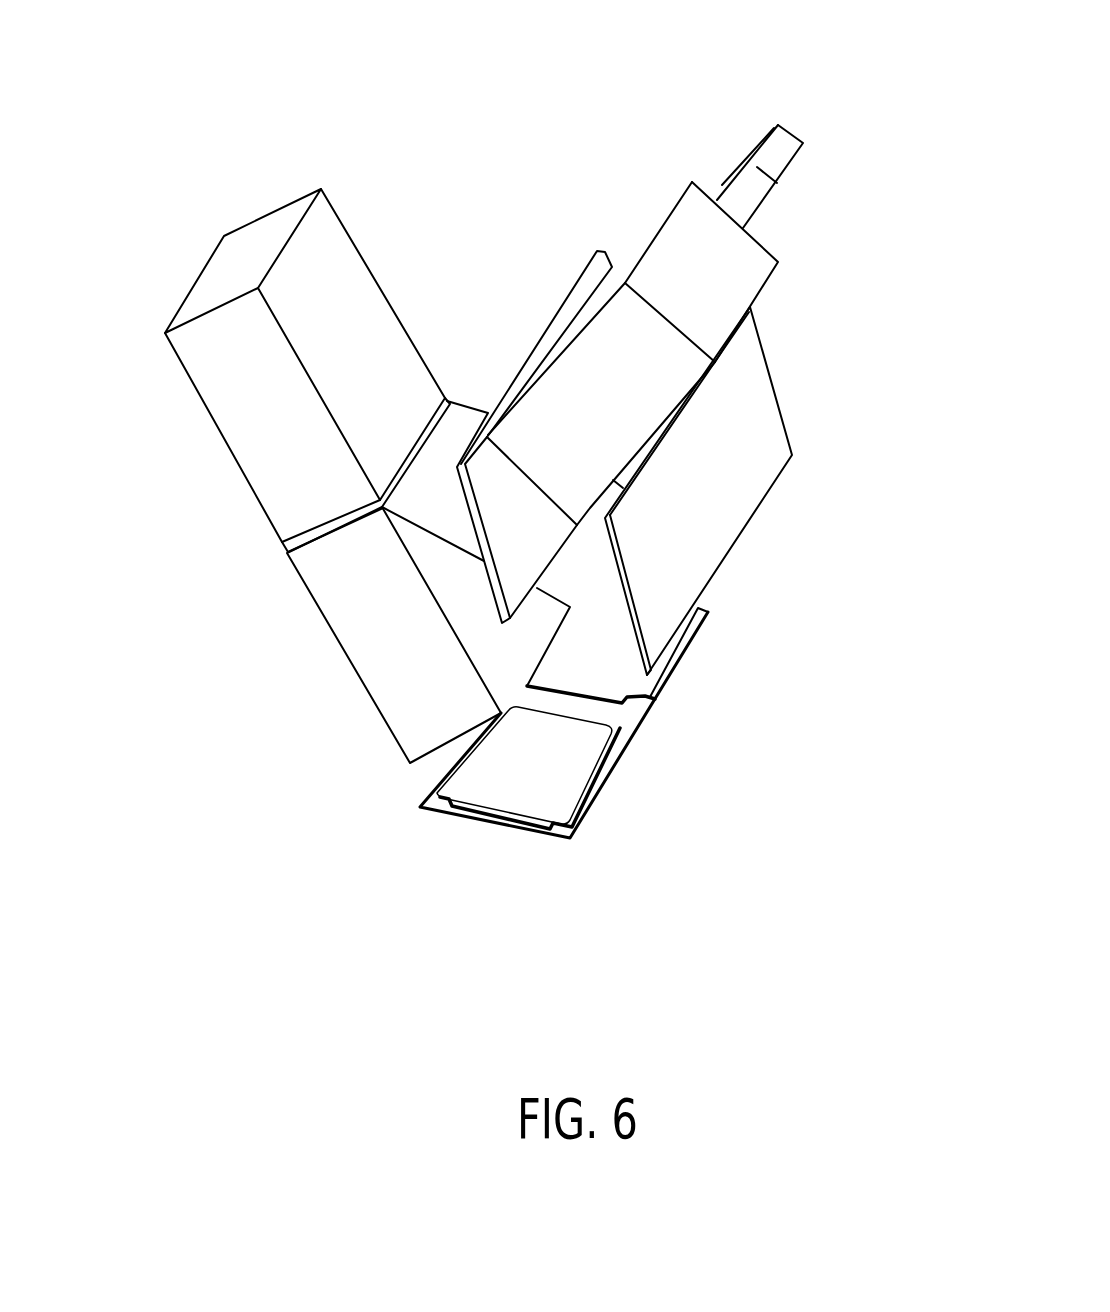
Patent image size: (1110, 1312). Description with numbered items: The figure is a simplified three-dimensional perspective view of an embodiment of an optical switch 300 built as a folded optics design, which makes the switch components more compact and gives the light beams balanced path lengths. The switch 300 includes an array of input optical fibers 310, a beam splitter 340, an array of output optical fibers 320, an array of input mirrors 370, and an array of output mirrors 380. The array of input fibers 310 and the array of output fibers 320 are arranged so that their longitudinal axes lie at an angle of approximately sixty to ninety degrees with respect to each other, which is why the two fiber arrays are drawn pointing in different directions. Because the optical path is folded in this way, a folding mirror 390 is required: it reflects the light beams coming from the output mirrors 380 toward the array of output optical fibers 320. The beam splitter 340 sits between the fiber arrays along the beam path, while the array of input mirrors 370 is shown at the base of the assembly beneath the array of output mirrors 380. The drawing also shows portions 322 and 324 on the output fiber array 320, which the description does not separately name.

The switch 300 is at (578, 114).
The array of input optical fibers 310 is at (213, 421).
The array of output optical fibers 320 is at (642, 374).
The antenna stem 322 is at (755, 277).
The antenna tip 324 is at (758, 188).
The beam splitter 340 is at (354, 674).
The array of input mirrors 370 is at (618, 775).
The array of output mirrors 380 is at (746, 534).
The folding mirror 390 is at (564, 293).